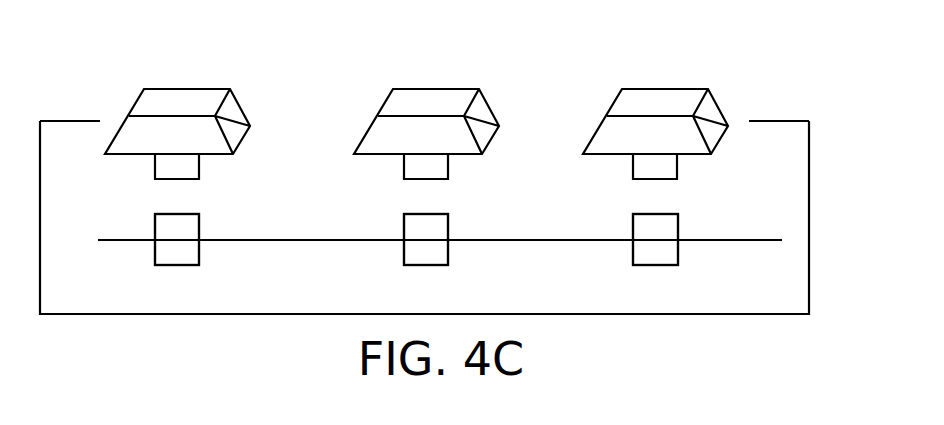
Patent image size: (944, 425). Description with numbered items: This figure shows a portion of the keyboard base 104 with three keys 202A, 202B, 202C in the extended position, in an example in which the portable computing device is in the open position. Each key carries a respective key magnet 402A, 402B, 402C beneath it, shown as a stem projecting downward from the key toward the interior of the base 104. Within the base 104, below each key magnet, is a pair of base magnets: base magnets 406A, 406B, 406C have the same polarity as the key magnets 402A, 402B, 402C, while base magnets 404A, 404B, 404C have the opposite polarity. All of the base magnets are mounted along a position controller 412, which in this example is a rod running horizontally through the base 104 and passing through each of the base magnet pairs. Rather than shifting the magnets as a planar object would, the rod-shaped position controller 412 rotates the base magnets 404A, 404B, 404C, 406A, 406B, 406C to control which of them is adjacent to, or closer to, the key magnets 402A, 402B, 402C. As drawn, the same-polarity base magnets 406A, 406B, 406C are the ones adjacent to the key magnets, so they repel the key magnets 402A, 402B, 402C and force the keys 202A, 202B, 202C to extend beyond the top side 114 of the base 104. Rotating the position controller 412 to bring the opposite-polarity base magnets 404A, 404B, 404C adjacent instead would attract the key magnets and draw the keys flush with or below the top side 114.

The base 104 is at (718, 315).
The top side 114 is at (780, 120).
The key 202A is at (193, 88).
The key 202B is at (443, 88).
The key 202C is at (672, 88).
The key magnet 402A is at (154, 165).
The key magnet 402B is at (403, 165).
The key magnet 402C is at (633, 165).
The base magnet 404A is at (175, 266).
The base magnet 404B is at (423, 266).
The base magnet 404C is at (652, 266).
The base magnet 406A is at (154, 218).
The base magnet 406B is at (403, 218).
The base magnet 406C is at (632, 218).
The position controller 412 is at (727, 242).